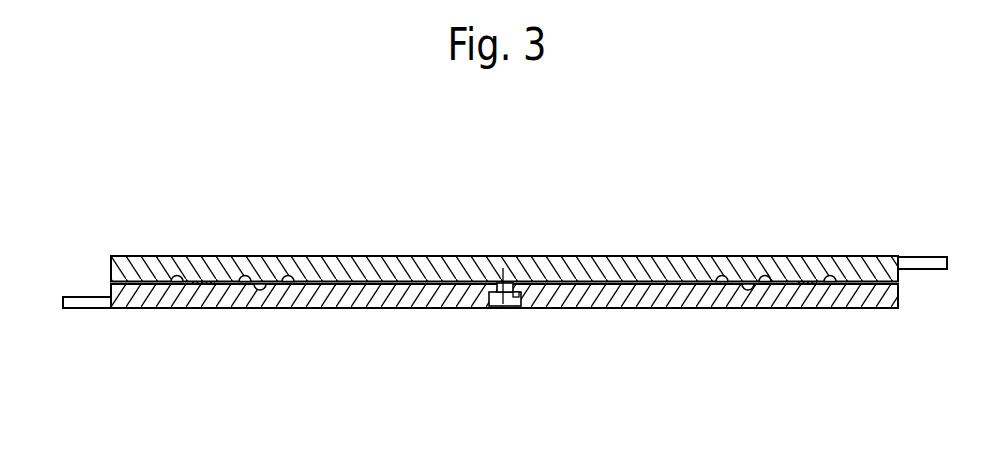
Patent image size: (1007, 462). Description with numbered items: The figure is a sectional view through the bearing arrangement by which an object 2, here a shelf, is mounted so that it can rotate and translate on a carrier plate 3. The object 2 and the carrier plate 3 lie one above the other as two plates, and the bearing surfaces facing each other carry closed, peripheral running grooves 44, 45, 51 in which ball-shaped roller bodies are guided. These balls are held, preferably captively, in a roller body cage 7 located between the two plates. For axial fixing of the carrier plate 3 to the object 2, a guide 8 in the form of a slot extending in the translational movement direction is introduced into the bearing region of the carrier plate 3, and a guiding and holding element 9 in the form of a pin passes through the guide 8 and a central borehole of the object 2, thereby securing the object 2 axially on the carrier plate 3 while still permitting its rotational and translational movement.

The object 2 is at (882, 266).
The carrier plate 3 is at (881, 303).
The roller body cage 7 is at (202, 284).
The guide 8 is at (502, 306).
The guiding and holding element 9 is at (488, 304).
The running groove 44 is at (503, 195).
The running groove 45 is at (177, 276).
The running groove 51 is at (261, 290).